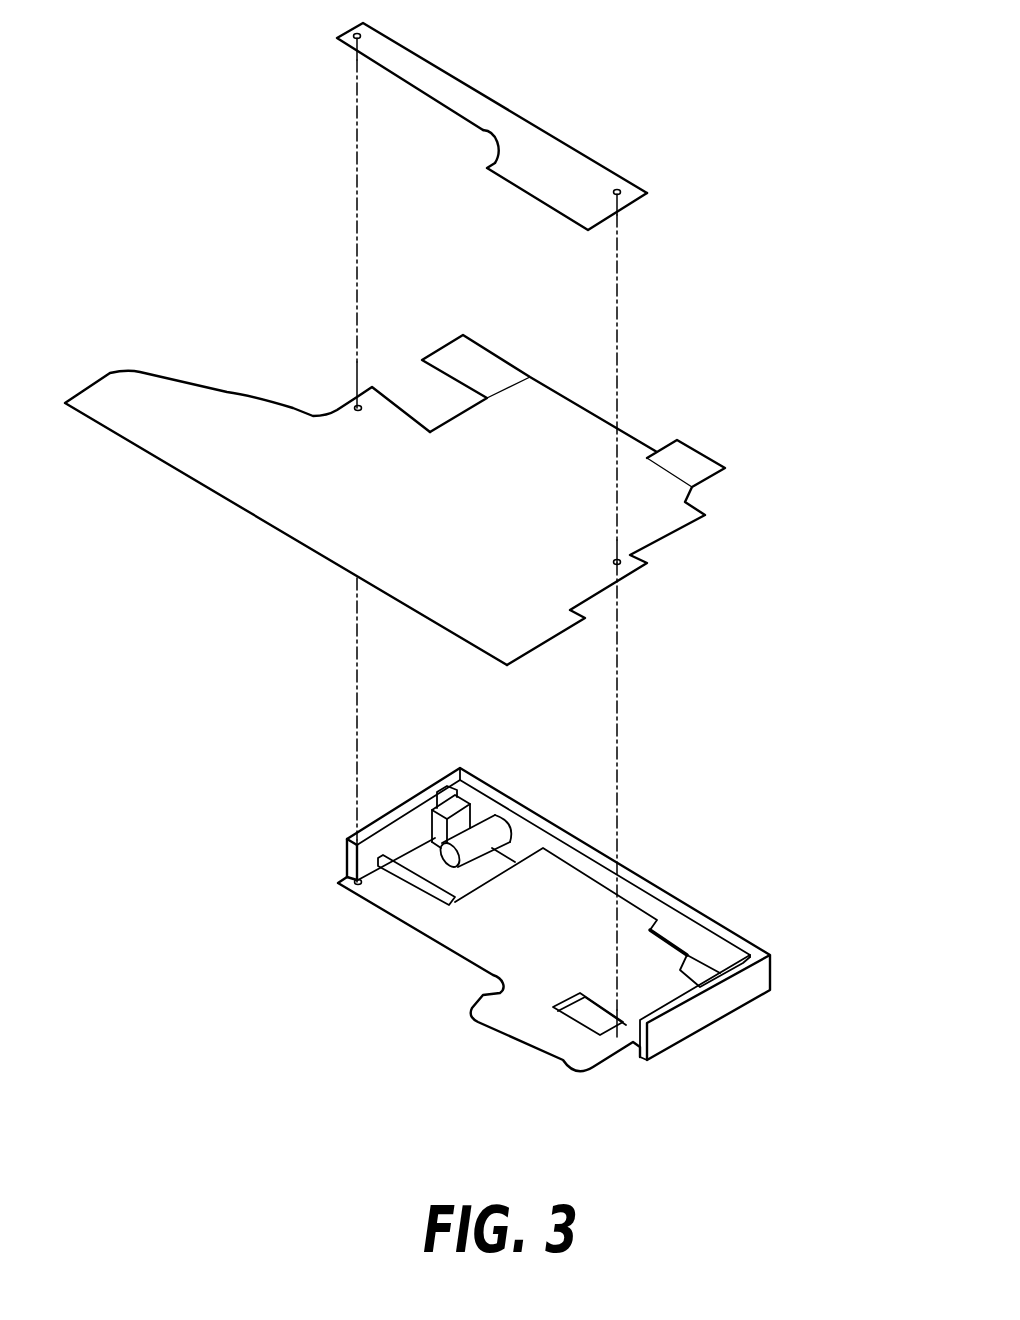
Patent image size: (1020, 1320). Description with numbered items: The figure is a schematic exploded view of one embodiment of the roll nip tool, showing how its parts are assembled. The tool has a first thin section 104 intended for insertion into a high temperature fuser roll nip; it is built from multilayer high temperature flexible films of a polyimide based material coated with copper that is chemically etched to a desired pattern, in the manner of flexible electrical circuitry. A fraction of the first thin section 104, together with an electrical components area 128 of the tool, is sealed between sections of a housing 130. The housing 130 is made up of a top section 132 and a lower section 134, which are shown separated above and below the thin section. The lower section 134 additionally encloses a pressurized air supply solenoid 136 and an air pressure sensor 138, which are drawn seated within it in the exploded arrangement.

The first thin section 104 is at (203, 463).
The electrical components area 128 is at (660, 518).
The housing 130 is at (447, 85).
The top section 132 is at (562, 157).
The lower section 134 is at (427, 935).
The pressurized air supply solenoid 136 is at (488, 830).
The air pressure sensor 138 is at (447, 803).